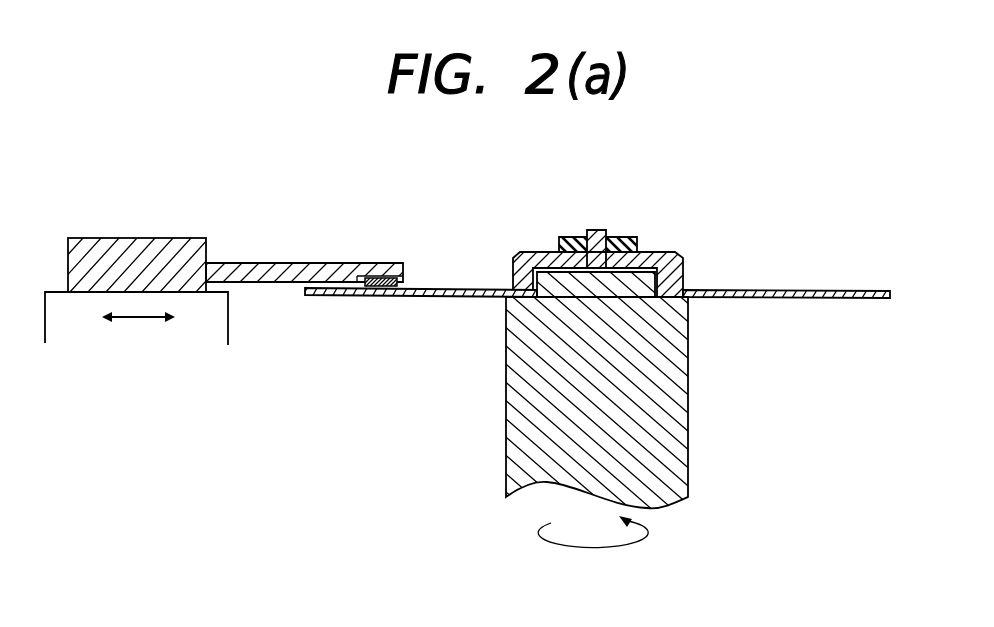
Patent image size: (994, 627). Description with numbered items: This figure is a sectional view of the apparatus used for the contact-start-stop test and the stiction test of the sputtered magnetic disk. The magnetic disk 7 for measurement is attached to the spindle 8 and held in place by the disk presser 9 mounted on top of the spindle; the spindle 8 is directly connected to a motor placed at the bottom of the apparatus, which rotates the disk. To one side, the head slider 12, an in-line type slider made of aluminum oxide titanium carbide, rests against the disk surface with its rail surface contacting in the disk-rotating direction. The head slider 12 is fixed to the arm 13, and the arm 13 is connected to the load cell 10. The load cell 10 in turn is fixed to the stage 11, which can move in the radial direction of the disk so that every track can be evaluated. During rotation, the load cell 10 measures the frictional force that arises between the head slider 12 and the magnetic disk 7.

The magnetic disk 7 is at (803, 299).
The spindle 8 is at (687, 387).
The disk presser 9 is at (637, 241).
The load cell 10 is at (177, 238).
The stage 11 is at (222, 330).
The head slider 12 is at (377, 297).
The arm 13 is at (278, 287).